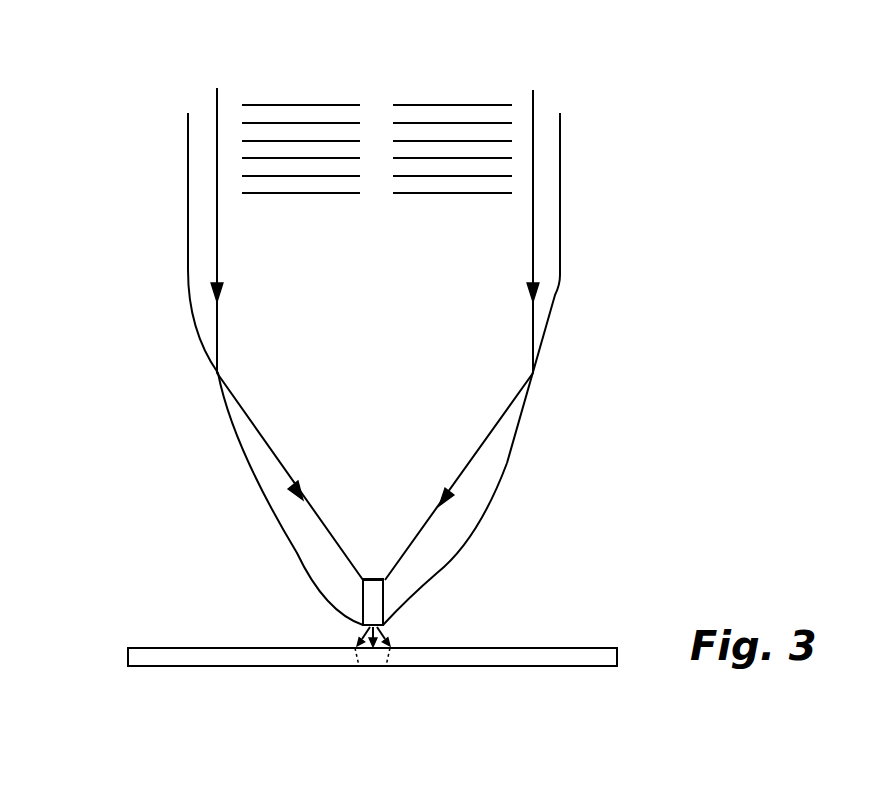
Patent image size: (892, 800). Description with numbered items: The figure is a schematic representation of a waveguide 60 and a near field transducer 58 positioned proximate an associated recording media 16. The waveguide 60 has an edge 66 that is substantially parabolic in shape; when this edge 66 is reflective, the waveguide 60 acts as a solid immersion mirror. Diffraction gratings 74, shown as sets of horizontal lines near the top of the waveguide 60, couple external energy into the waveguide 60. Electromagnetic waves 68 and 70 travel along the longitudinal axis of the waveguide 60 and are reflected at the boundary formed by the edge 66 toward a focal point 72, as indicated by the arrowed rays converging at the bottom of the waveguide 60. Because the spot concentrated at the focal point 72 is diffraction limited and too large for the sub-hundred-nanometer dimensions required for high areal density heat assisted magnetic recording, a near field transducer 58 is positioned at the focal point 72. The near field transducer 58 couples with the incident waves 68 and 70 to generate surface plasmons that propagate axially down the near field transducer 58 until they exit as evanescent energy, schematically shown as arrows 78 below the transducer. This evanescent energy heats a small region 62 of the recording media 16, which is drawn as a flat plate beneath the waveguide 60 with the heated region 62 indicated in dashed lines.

The waveguide 60 is at (130, 124).
The diffraction gratings 74 is at (307, 122).
The electromagnetic wave 68 is at (218, 321).
The electromagnetic wave 70 is at (536, 103).
The edge 66 is at (517, 433).
The near field transducer 58 is at (378, 610).
The focal point 72 is at (407, 593).
The arrows 78 is at (354, 629).
The recording media 16 is at (595, 636).
The small region 62 is at (378, 657).